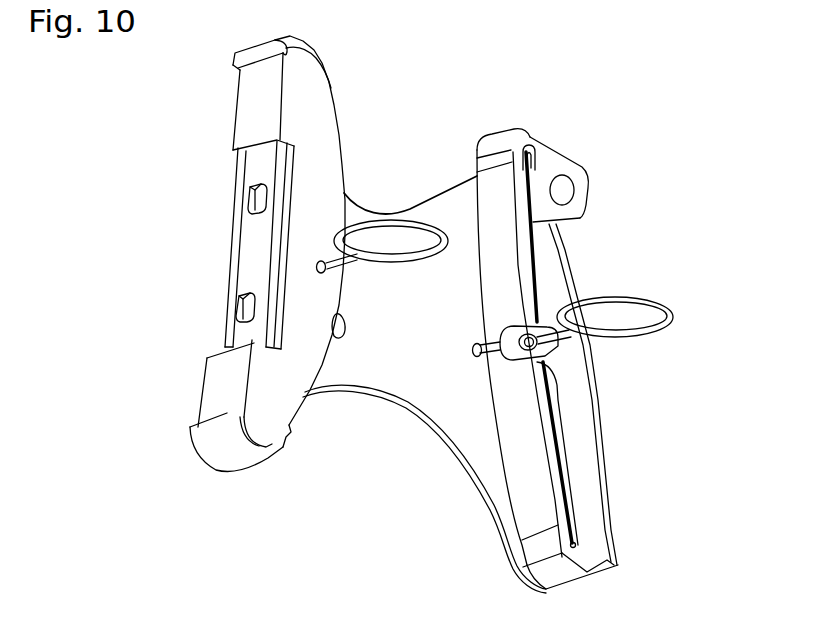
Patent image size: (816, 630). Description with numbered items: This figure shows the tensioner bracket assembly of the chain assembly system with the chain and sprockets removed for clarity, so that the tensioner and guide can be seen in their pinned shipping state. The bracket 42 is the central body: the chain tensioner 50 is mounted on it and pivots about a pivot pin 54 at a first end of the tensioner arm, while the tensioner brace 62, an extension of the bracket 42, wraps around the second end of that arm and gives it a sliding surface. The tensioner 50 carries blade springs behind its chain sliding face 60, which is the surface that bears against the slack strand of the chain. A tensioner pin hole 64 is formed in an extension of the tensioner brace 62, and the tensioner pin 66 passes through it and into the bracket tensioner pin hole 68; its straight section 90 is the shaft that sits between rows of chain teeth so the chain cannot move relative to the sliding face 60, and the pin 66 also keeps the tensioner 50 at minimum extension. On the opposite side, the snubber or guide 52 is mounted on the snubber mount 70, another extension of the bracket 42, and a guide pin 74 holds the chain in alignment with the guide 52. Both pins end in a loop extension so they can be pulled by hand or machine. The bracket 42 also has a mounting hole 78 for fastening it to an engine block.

The bracket 42 is at (423, 331).
The chain tensioner 50 is at (551, 165).
The snubber or guide 52 is at (318, 335).
The pivot pin 54 is at (563, 190).
The chain sliding face 60 is at (498, 247).
The tensioner brace 62 is at (593, 427).
The tensioner pin hole 64 is at (534, 347).
The tensioner pin 66 is at (633, 300).
The bracket tensioner pin hole 68 is at (477, 362).
The snubber mount 70 is at (250, 254).
The guide pin 74 is at (391, 226).
The mounting hole 78 is at (336, 338).
The straight section 90 is at (478, 367).